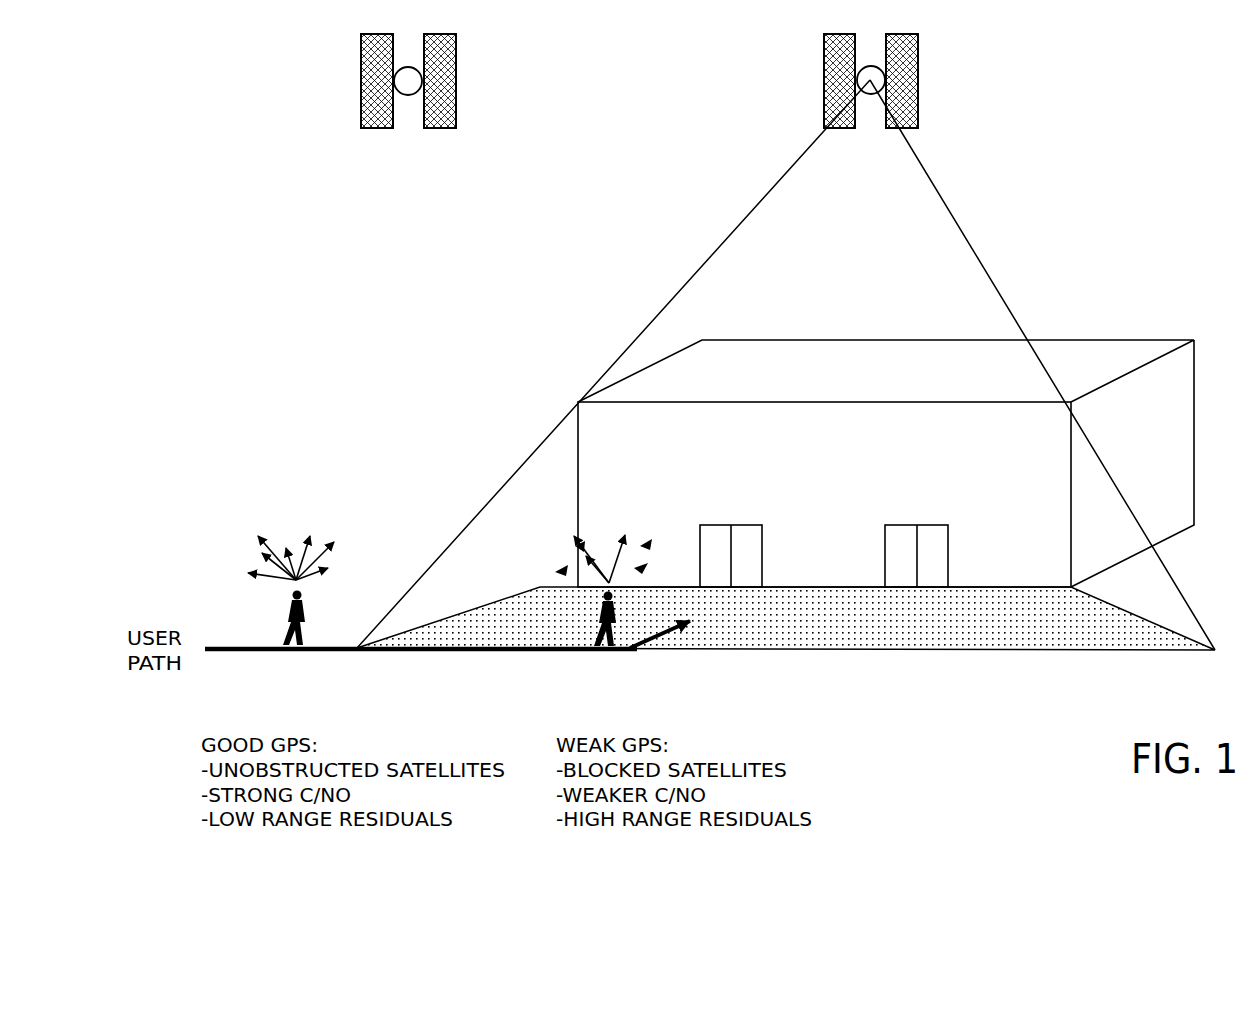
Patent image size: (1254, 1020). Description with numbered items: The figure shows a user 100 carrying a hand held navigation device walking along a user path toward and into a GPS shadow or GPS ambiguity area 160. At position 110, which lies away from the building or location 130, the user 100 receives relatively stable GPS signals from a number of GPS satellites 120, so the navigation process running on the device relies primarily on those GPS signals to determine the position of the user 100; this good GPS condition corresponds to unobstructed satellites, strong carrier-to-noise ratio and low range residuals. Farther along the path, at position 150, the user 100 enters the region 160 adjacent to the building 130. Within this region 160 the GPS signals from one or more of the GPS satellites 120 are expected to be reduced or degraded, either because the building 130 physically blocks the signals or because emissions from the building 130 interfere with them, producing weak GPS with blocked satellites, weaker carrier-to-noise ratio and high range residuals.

The user 100 is at (344, 442).
The position 110 is at (292, 665).
The GPS satellites 120 is at (1034, 87).
The building 130 is at (847, 338).
The position 150 is at (608, 663).
The GPS shadow or GPS ambiguity area 160 is at (778, 632).